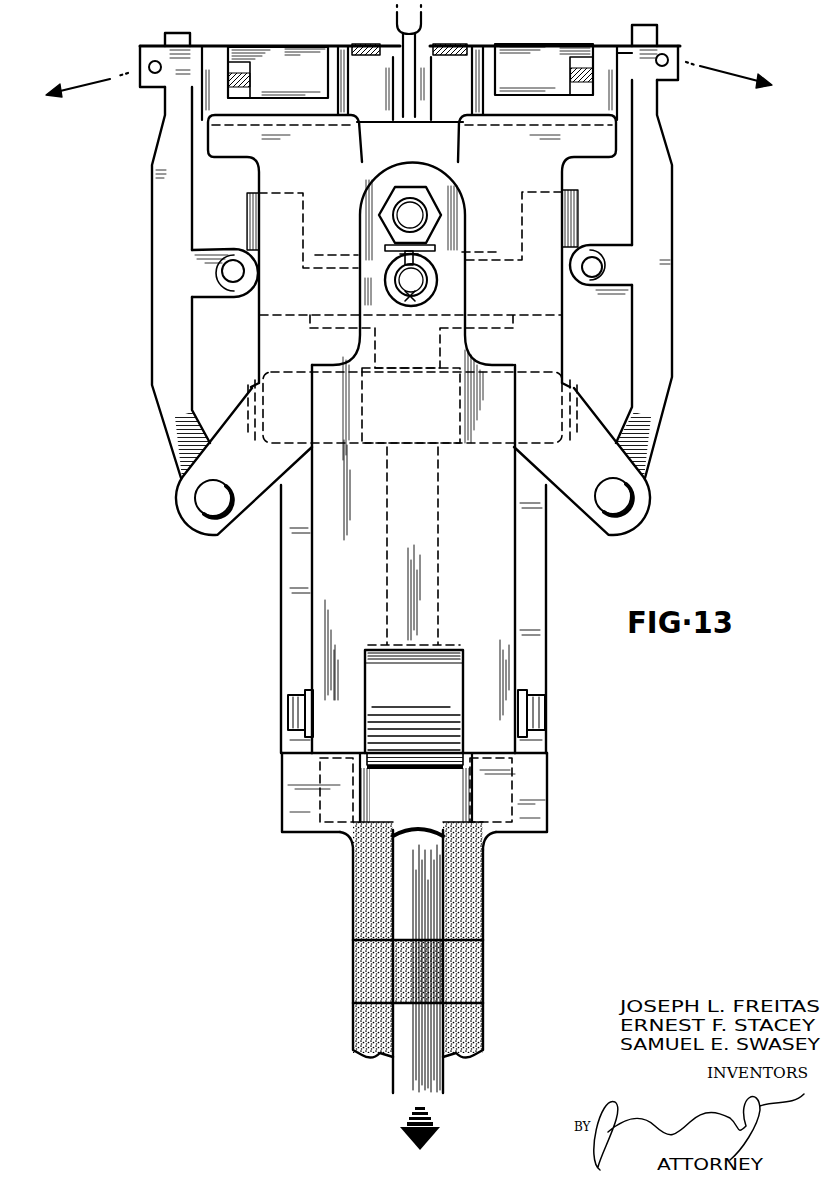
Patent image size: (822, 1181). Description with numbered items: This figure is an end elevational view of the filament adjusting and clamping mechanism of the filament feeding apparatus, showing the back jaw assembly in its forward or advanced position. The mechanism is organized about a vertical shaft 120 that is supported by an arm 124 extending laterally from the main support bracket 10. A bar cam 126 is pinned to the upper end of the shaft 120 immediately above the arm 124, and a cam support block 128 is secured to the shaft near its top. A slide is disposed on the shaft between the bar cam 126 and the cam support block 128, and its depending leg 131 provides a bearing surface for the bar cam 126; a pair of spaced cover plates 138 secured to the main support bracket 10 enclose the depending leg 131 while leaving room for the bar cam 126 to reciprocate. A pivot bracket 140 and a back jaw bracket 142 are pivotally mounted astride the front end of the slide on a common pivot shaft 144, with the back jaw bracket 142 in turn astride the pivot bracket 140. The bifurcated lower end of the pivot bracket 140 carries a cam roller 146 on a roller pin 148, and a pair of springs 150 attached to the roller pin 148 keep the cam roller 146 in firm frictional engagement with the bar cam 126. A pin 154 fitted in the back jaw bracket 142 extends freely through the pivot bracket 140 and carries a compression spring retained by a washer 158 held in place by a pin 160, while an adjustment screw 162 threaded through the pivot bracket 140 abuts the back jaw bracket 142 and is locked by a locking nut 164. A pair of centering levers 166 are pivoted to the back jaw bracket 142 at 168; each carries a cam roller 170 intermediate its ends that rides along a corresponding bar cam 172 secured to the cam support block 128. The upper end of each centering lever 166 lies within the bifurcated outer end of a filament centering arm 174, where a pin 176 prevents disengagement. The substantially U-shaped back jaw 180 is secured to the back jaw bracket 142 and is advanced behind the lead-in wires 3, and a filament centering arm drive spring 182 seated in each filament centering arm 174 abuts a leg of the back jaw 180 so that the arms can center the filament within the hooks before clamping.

The lead-in wires 3 is at (403, 49).
The main support bracket 10 is at (360, 1034).
The shaft 120 is at (392, 913).
The arm 124 is at (360, 988).
The bar cam 126 is at (375, 838).
The cam support block 128 is at (505, 240).
The depending leg 131 is at (486, 840).
The cover plates 138 is at (292, 798).
The pivot bracket 140 is at (500, 568).
The back jaw bracket 142 is at (548, 338).
The pivot shaft 144 is at (256, 388).
The cam roller 146 is at (457, 676).
The roller pin 148 is at (290, 730).
The springs 150 is at (288, 700).
The pin 154 is at (398, 282).
The washer 158 is at (437, 294).
The pin 160 is at (423, 262).
The adjustment screw 162 is at (418, 210).
The locking nut 164 is at (433, 220).
The centering levers 166 is at (160, 147).
The pivot 168 is at (200, 500).
The cam roller 170 is at (232, 250).
The bar cam 172 is at (250, 212).
The filament centering arm 174 is at (155, 50).
The pin 176 is at (148, 67).
The back jaw 180 is at (447, 120).
The filament centering arm drive spring 182 is at (254, 34).